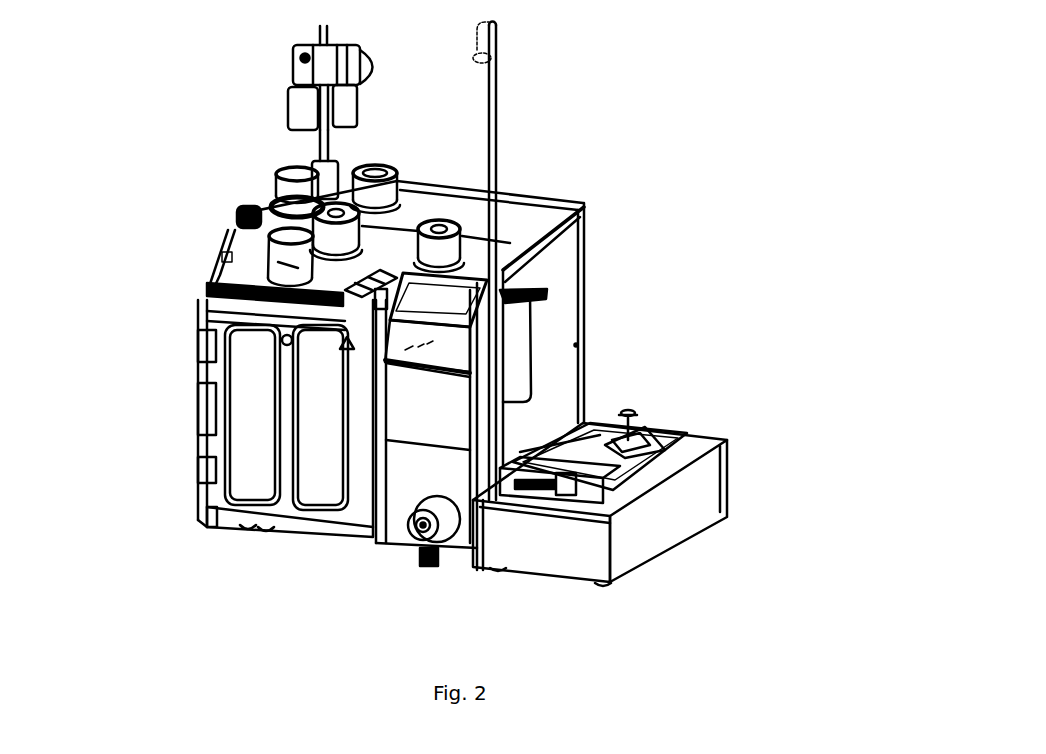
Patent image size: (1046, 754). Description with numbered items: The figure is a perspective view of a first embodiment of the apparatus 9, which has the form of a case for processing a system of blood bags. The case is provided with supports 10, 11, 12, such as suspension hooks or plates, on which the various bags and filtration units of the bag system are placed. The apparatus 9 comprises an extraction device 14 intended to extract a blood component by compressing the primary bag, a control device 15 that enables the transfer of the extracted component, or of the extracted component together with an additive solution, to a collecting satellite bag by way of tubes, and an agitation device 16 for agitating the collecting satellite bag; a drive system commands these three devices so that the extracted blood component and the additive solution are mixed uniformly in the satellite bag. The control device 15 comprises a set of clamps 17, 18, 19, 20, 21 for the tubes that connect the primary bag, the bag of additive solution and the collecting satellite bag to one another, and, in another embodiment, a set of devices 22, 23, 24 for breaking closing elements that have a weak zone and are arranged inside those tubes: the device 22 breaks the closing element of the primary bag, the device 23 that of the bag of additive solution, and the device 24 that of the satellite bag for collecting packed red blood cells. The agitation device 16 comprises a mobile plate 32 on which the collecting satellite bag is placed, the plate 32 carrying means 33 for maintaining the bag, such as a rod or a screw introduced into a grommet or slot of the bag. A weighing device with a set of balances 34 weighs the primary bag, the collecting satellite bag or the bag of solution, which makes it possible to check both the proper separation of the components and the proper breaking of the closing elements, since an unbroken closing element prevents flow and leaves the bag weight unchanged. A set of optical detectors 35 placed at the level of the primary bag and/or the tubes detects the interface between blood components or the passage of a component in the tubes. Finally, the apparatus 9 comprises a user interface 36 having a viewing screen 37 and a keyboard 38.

The apparatus 9 is at (537, 193).
The support 10 is at (227, 318).
The support 11 is at (499, 113).
The support 12 is at (593, 423).
The extraction device 14 is at (289, 508).
The control device 15 is at (290, 172).
The agitation device 16 is at (658, 426).
The clamp 17 is at (420, 535).
The clamp 18 is at (443, 220).
The clamp 19 is at (369, 165).
The clamp 20 is at (238, 212).
The clamp 21 is at (267, 177).
The device for breaking 22 is at (215, 278).
The device for breaking 23 is at (293, 64).
The device for breaking 24 is at (550, 495).
The mobile plate 32 is at (667, 470).
The means for maintaining the bag 33 is at (628, 415).
The balance 34 is at (490, 60).
The optical detector 35 is at (285, 238).
The user interface 36 is at (503, 277).
The viewing screen 37 is at (437, 333).
The keyboard 38 is at (507, 290).